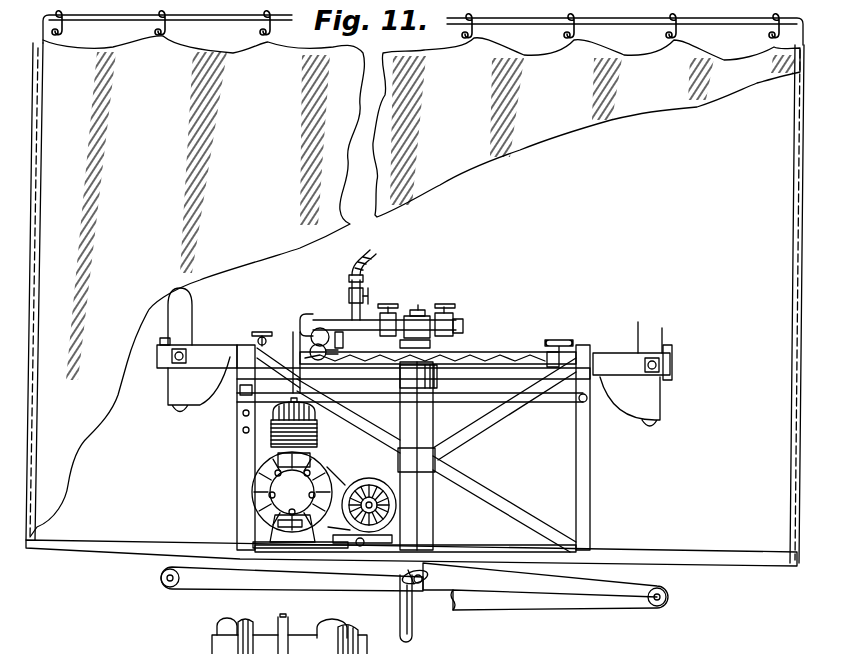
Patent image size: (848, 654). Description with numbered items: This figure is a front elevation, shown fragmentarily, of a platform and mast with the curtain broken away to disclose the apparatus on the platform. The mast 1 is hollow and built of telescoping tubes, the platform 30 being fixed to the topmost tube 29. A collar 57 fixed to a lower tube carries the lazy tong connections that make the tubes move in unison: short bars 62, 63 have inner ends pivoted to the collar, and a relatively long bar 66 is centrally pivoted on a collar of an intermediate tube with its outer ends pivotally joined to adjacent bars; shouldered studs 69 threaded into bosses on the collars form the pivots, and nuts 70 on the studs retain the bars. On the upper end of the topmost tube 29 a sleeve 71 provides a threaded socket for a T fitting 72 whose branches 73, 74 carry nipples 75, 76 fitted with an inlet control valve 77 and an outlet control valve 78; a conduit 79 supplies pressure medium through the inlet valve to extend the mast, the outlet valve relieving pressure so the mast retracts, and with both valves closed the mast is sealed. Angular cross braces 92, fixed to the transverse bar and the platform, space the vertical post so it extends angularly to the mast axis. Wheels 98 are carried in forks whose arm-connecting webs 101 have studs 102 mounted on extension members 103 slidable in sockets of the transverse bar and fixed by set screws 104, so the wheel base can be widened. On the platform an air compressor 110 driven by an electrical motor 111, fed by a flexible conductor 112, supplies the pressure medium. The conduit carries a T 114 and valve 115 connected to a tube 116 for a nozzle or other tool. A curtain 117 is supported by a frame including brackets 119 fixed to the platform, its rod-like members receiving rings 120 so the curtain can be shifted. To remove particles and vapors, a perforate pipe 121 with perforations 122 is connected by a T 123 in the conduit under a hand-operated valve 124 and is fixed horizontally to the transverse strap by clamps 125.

The mast 1 is at (401, 614).
The topmost tube 29 is at (418, 522).
The platform 30 is at (503, 554).
The collar 57 is at (216, 641).
The short bar 62 is at (310, 577).
The short bar 63 is at (628, 600).
The long bar 66 is at (548, 606).
The shouldered stud 69 is at (402, 574).
The nut 70 is at (425, 585).
The sleeve 71 is at (440, 378).
The T fitting 72 is at (419, 315).
The branch 73 is at (414, 310).
The branch 74 is at (446, 312).
The nipple 75 is at (412, 311).
The nipple 76 is at (450, 305).
The inlet control valve 77 is at (380, 320).
The outlet control valve 78 is at (458, 321).
The conduit 79 is at (295, 330).
The angular cross brace 92 is at (467, 483).
The wheel 98 is at (186, 328).
The arm-connecting web 101 is at (165, 356).
The stud 102 is at (173, 366).
The extension member 103 is at (222, 388).
The set screw 104 is at (580, 348).
The air compressor 110 is at (276, 436).
The electrical motor 111 is at (370, 478).
The flexible conductor 112 is at (345, 560).
The T 114 is at (352, 335).
The valve 115 is at (352, 268).
The tube 116 is at (372, 251).
The curtain 117 is at (587, 124).
The bracket 119 is at (154, 541).
The ring 120 is at (160, 30).
The perforate pipe 121 is at (442, 379).
The perforation 122 is at (500, 353).
The T 123 is at (310, 313).
The hand-operated valve 124 is at (292, 330).
The clamp 125 is at (528, 350).